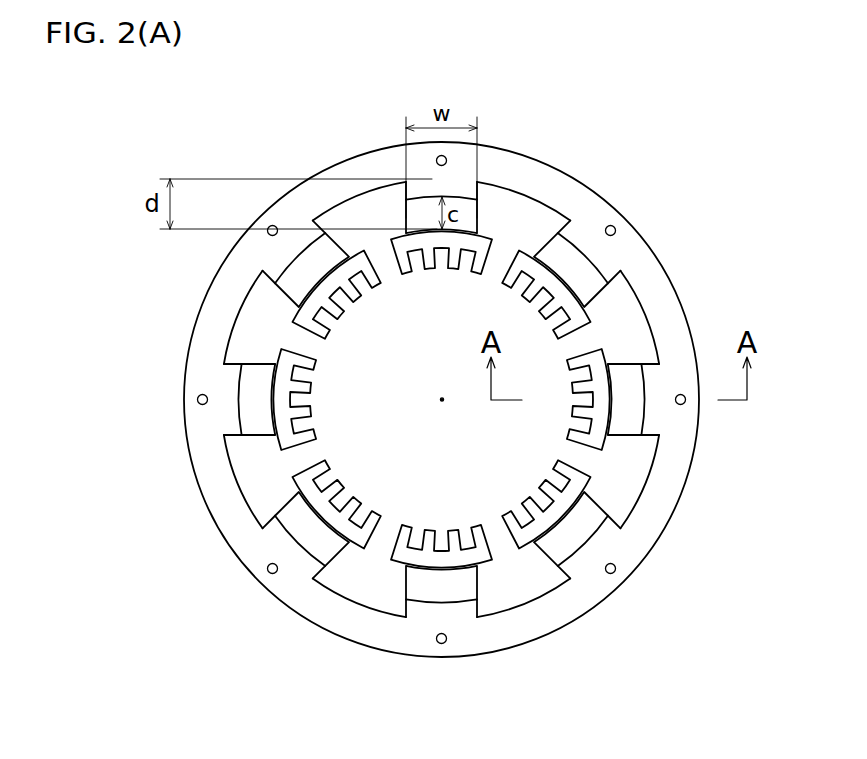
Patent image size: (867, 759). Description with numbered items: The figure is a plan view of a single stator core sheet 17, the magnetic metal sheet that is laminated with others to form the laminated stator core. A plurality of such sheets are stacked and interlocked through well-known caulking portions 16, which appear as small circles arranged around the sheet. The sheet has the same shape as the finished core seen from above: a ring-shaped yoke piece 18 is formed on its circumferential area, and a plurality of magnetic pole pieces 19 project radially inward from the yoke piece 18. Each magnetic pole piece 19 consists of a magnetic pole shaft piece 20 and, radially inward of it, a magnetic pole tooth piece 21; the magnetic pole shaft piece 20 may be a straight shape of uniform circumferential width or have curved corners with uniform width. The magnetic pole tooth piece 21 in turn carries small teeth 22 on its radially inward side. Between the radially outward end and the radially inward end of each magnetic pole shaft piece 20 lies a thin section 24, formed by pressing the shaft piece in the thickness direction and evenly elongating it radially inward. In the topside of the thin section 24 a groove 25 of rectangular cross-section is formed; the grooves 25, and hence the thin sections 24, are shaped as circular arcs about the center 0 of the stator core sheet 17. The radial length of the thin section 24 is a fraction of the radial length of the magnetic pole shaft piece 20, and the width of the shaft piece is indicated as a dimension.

The center of the stator core sheet 0 is at (442, 400).
The caulking portion 16 is at (445, 643).
The stator core sheet 17 is at (620, 192).
The yoke piece 18 is at (680, 342).
The magnetic pole piece 19 is at (600, 206).
The magnetic pole shaft piece 20 is at (620, 209).
The magnetic pole tooth piece 21 is at (527, 262).
The small teeth 22 is at (530, 292).
The thin section 24 is at (590, 282).
The groove 25 is at (568, 265).